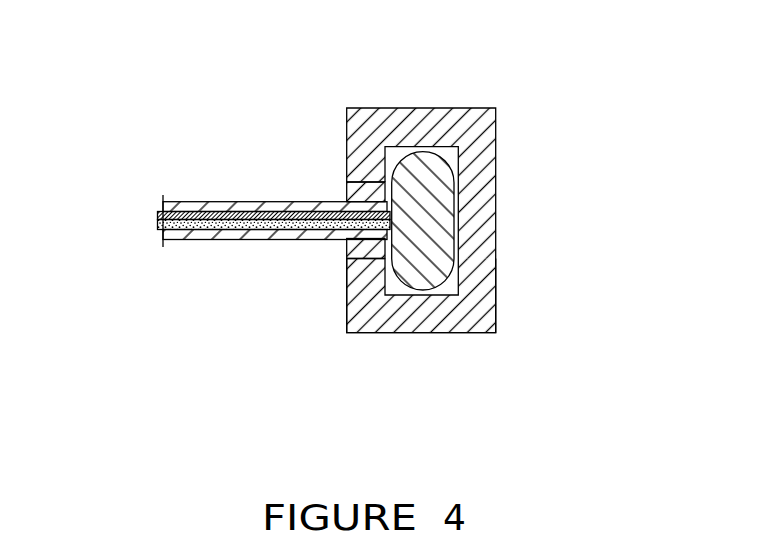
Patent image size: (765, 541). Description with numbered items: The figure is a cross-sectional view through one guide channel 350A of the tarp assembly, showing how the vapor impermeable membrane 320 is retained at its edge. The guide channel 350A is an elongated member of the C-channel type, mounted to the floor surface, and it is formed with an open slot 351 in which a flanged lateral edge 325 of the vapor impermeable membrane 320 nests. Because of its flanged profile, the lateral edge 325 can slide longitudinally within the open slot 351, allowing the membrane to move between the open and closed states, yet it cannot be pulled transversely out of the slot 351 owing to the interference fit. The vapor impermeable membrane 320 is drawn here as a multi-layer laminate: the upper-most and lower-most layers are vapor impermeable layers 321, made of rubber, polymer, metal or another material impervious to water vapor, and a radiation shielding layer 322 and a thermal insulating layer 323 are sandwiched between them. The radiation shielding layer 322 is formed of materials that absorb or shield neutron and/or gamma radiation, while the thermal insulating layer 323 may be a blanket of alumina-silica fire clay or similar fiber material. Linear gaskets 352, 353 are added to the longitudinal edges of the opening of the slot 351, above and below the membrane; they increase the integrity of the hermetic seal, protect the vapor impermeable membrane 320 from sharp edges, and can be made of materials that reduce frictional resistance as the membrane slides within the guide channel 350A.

The vapor impermeable membrane 320 is at (215, 182).
The vapor impermeable layer 321 is at (312, 208).
The radiation shielding layer 322 is at (283, 214).
The thermal insulating layer 323 is at (258, 225).
The flanged lateral edge 325 is at (347, 323).
The guide channel 350A is at (359, 199).
The open slot 351 is at (459, 147).
The linear gasket 352 is at (351, 251).
The linear gasket 353 is at (362, 192).